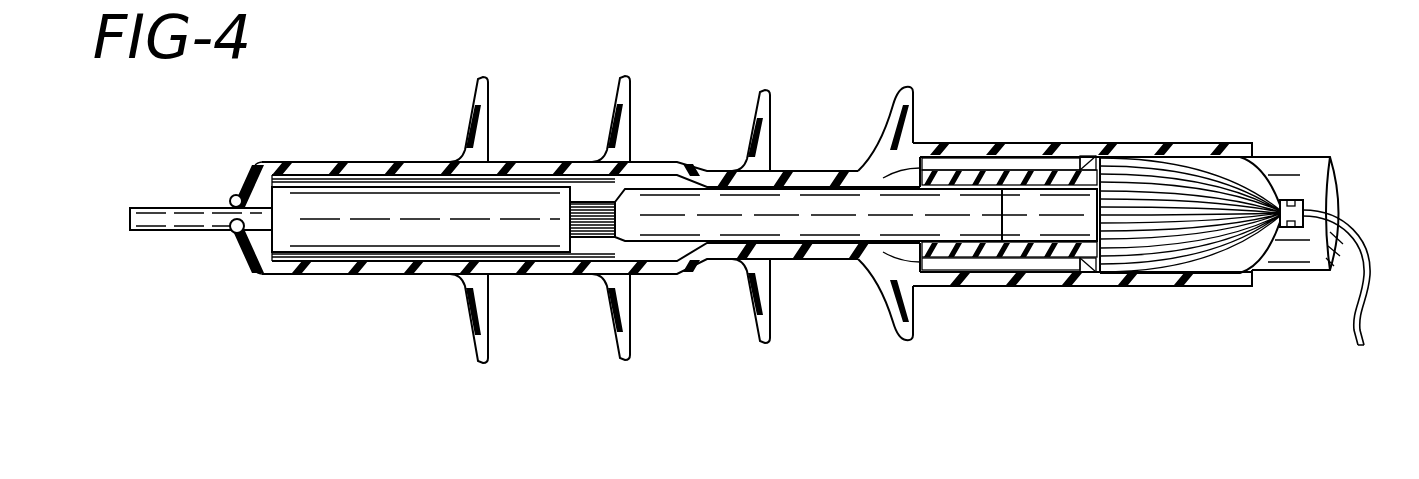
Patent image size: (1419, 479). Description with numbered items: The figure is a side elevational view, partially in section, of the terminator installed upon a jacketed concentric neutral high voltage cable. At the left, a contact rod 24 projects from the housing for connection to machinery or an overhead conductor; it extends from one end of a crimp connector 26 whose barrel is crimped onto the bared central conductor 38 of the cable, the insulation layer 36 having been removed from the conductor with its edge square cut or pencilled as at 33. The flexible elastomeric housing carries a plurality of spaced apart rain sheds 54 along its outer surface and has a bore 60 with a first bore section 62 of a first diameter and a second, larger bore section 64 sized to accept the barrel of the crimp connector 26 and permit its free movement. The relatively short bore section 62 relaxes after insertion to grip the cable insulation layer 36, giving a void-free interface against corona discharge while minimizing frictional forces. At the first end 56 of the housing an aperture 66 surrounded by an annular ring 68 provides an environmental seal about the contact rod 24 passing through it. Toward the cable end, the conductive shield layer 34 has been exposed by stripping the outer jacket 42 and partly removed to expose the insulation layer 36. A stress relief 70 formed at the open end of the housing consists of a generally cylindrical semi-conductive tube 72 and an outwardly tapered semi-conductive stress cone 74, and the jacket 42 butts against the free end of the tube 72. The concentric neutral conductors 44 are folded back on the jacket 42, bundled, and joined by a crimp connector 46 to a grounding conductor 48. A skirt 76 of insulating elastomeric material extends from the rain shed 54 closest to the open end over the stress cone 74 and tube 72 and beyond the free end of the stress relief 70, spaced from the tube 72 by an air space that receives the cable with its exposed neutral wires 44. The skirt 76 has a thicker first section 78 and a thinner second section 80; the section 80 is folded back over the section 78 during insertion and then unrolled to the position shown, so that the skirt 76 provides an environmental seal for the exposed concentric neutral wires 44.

The contact rod 24 is at (143, 212).
The crimp connector 26 is at (296, 203).
The pencilled edge of insulation layer 33 is at (612, 240).
The conductive shield layer 34 is at (1029, 203).
The insulation layer 36 is at (805, 205).
The conductor 38 is at (590, 202).
The outer jacket 42 is at (1281, 170).
The concentric neutral conductors 44 is at (1168, 245).
The crimp connector 46 is at (1291, 200).
The grounding conductor 48 is at (1363, 308).
The rain sheds 54 is at (472, 107).
The first end 56 is at (233, 196).
The bore 60 is at (370, 248).
The first bore section 62 is at (838, 193).
The second bore section 64 is at (347, 195).
The aperture 66 is at (233, 227).
The annular ring 68 is at (244, 244).
The stress relief 70 is at (995, 262).
The tube 72 is at (1022, 268).
The stress cone 74 is at (883, 252).
The skirt 76 is at (1072, 143).
The first section of skirt 78 is at (943, 143).
The second section of skirt 80 is at (1172, 143).